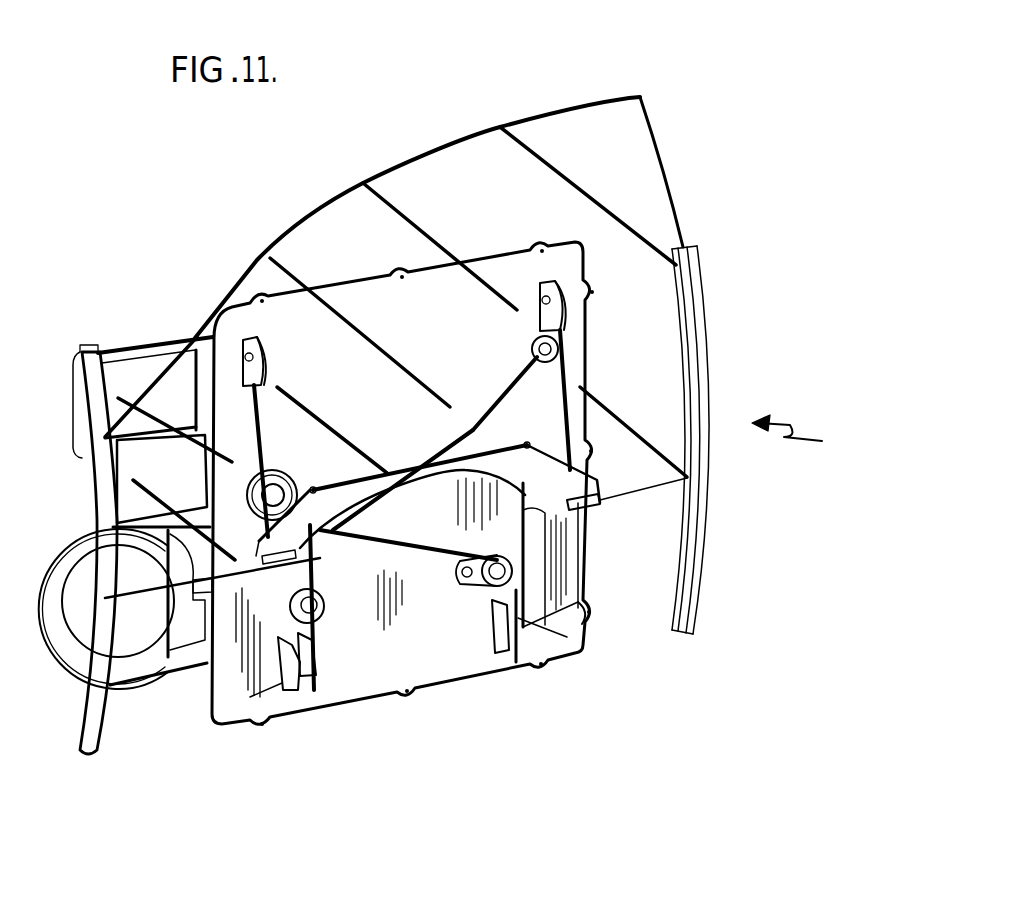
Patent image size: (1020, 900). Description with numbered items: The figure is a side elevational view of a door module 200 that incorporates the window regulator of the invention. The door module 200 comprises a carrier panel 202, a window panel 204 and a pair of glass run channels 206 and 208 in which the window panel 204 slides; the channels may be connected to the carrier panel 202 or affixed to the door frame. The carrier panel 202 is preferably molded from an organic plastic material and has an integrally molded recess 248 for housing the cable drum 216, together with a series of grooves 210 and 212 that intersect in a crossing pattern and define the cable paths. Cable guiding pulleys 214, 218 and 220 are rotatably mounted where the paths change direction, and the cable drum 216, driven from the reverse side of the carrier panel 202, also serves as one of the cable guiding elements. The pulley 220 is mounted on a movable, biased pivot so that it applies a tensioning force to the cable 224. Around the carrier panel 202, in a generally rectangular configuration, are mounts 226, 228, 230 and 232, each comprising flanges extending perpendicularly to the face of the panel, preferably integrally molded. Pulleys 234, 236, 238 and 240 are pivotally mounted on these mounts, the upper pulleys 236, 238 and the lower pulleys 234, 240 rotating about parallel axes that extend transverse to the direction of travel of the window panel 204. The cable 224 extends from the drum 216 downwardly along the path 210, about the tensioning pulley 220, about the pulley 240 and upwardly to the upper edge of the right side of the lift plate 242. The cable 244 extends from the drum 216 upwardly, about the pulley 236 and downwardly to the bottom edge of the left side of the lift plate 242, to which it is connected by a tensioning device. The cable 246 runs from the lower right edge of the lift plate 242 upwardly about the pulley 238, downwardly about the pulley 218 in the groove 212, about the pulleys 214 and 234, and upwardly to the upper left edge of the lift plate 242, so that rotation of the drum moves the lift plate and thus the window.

The door module 200 is at (814, 434).
The carrier panel 202 is at (430, 673).
The window panel 204 is at (492, 128).
The glass run channel 206 is at (102, 487).
The glass run channel 208 is at (699, 333).
The groove 210 is at (437, 523).
The groove 212 is at (467, 427).
The pulley 214 is at (317, 622).
The cable drum 216 is at (290, 455).
The pulley 218 is at (530, 351).
The tensioning pulley 220 is at (477, 583).
The cable 224 is at (573, 537).
The mount 226 is at (580, 637).
The mount 228 is at (230, 720).
The mount 230 is at (267, 348).
The mount 232 is at (537, 310).
The pulley 234 is at (299, 692).
The pulley 236 is at (253, 337).
The pulley 238 is at (556, 267).
The pulley 240 is at (517, 647).
The lift plate 242 is at (603, 503).
The cable 244 is at (259, 388).
The cable 246 is at (448, 446).
The recess 248 is at (247, 497).